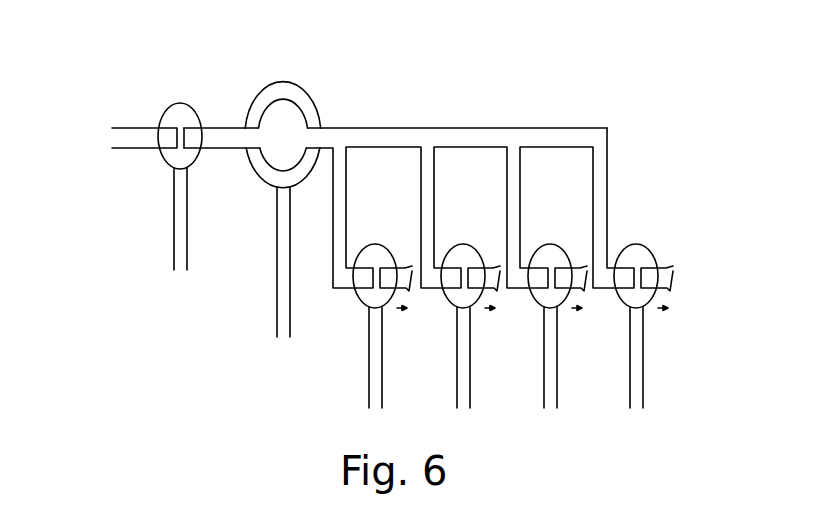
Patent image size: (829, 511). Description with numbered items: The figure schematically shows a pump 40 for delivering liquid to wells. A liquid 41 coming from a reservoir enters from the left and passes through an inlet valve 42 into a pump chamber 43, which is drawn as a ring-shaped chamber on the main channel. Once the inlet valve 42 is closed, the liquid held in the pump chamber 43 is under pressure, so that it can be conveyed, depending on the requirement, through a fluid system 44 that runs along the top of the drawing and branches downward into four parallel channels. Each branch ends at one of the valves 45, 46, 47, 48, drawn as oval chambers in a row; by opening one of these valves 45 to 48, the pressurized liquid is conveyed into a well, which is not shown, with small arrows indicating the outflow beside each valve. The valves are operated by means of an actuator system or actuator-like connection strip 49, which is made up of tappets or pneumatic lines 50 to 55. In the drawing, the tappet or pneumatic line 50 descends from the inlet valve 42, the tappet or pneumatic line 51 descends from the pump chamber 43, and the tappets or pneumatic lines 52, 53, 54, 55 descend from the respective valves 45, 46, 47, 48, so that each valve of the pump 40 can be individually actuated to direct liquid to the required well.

The pump 40 is at (612, 118).
The liquid 41 is at (113, 138).
The inlet valve 42 is at (180, 103).
The pump chamber 43 is at (310, 97).
The fluid system 44 is at (449, 127).
The valve 45 is at (369, 298).
The valve 46 is at (457, 298).
The valve 47 is at (544, 298).
The valve 48 is at (630, 298).
The actuator-like connection strip 49 is at (282, 342).
The tappet or pneumatic line 50 is at (174, 227).
The tappet or pneumatic line 51 is at (277, 297).
The tappet or pneumatic line 52 is at (382, 382).
The tappet or pneumatic line 53 is at (470, 382).
The tappet or pneumatic line 54 is at (557, 382).
The tappet or pneumatic line 55 is at (643, 382).